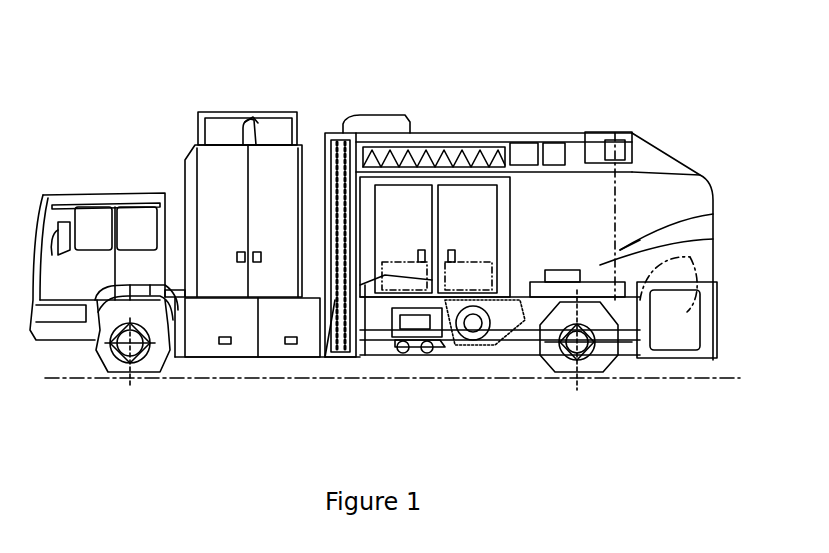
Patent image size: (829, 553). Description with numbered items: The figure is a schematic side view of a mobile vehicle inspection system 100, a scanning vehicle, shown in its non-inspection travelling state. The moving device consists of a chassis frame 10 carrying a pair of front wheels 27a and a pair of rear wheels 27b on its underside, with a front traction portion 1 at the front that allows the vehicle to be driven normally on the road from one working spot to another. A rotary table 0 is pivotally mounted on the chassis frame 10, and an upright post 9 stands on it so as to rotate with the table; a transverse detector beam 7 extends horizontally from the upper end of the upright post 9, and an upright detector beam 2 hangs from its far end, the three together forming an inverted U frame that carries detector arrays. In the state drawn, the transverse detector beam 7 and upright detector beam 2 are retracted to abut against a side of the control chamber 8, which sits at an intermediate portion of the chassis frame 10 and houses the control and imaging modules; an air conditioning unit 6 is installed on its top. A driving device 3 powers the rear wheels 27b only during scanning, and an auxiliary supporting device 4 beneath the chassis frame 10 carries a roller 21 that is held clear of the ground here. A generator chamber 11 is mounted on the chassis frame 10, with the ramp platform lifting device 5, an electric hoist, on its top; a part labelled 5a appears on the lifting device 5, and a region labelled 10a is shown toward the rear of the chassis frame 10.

The fire-fighting vehicle 100 is at (130, 117).
The front traction portion 1 is at (43, 350).
The upright detector beam 2 is at (320, 315).
The driving device 3 is at (395, 345).
The auxiliary supporting device 4 is at (457, 348).
The ramp platform lifting device 5 is at (213, 110).
The cabinet fitting 5a is at (260, 130).
The air conditioning unit 6 is at (352, 118).
The transverse detector beam 7 is at (433, 150).
The control chamber 8 is at (470, 215).
The upright post 9 is at (713, 214).
The rotary table 0 is at (713, 239).
The chassis frame 10 is at (167, 354).
The rear compartment 10a is at (660, 290).
The generator chamber 11 is at (213, 340).
The roller 21 is at (487, 348).
The front wheels 27a is at (118, 368).
The rear wheels 27b is at (585, 370).